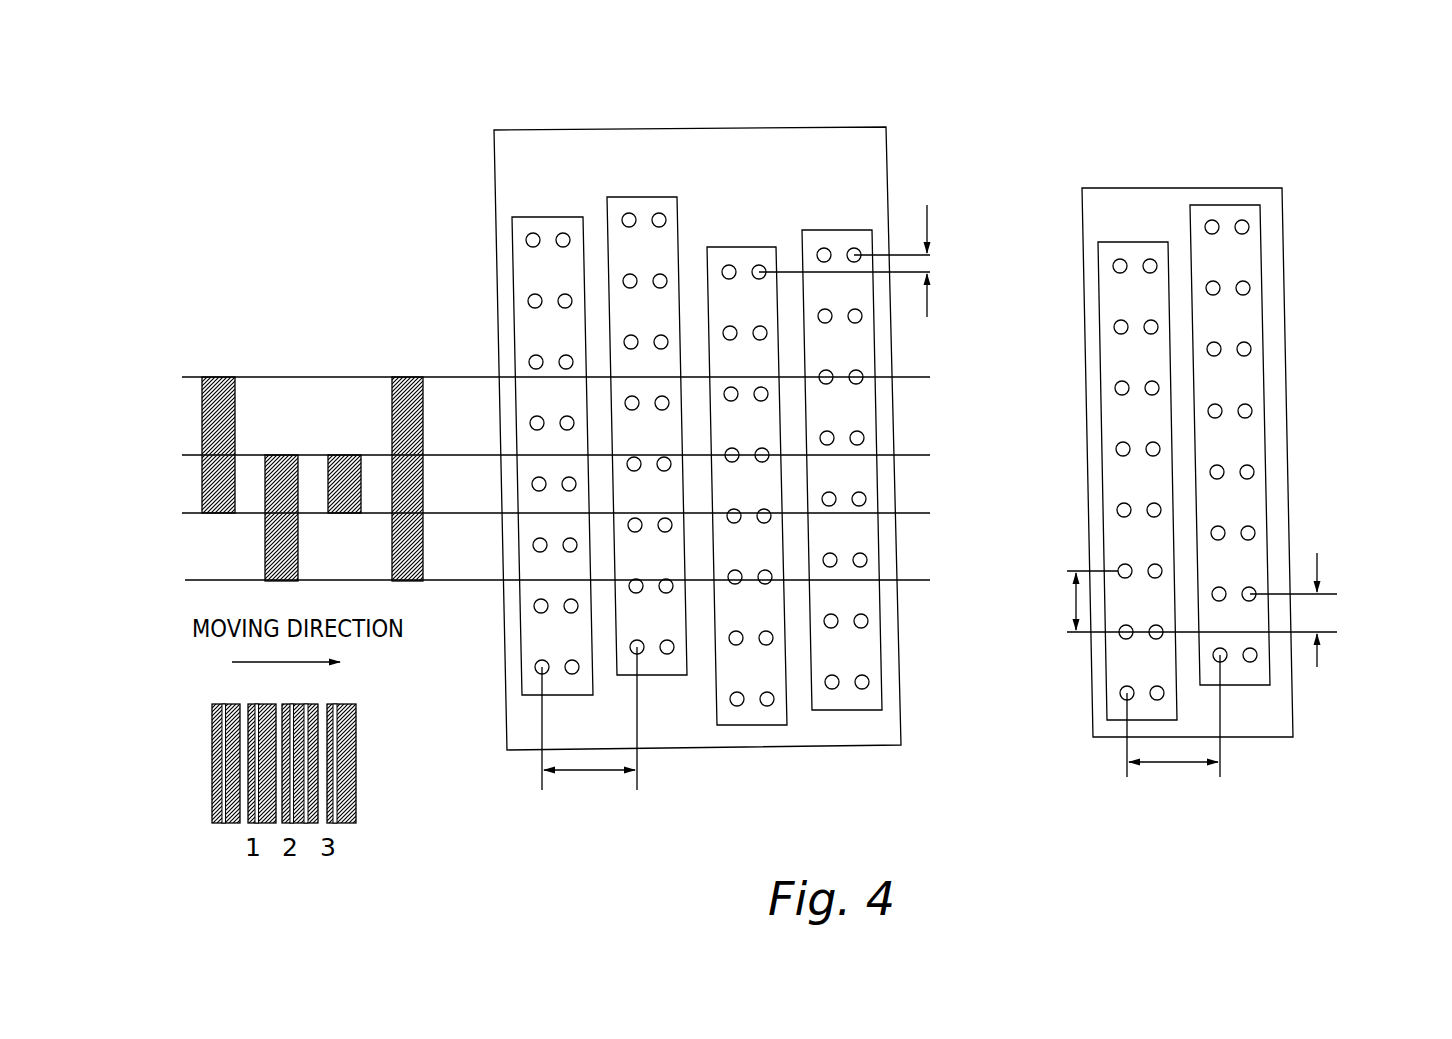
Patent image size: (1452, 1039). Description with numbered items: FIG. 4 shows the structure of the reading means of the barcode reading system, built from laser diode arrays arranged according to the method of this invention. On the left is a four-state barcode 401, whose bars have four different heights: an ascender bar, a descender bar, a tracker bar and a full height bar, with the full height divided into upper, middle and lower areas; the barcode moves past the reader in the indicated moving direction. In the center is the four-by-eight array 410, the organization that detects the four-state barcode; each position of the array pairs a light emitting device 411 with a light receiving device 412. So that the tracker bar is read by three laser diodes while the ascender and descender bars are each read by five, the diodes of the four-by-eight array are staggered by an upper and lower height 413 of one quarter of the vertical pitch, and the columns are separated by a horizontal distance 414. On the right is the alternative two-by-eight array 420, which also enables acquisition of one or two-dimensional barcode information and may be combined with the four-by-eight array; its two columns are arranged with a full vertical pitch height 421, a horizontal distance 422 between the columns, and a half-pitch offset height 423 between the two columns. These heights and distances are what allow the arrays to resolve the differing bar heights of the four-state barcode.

The 4 state barcode 401 is at (283, 370).
The 4×8 array 410 is at (634, 387).
The light emitting device 411 is at (624, 209).
The light receiving device 412 is at (724, 125).
The laser diode upper and lower height 413 is at (901, 261).
The distance 414 is at (627, 750).
The 2×8 array 420 is at (1093, 720).
The laser diode upper and lower height 421 is at (1147, 618).
The distance 422 is at (1203, 751).
The laser diode upper and lower height 423 is at (1351, 610).